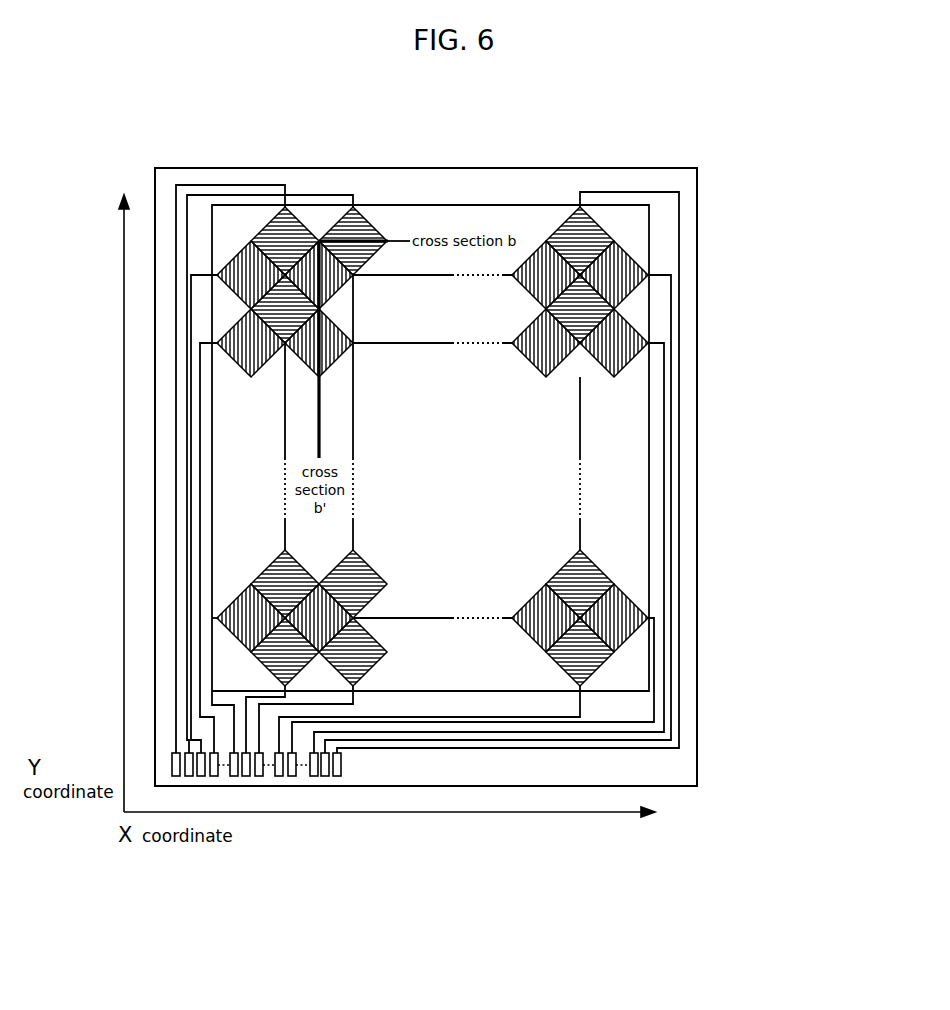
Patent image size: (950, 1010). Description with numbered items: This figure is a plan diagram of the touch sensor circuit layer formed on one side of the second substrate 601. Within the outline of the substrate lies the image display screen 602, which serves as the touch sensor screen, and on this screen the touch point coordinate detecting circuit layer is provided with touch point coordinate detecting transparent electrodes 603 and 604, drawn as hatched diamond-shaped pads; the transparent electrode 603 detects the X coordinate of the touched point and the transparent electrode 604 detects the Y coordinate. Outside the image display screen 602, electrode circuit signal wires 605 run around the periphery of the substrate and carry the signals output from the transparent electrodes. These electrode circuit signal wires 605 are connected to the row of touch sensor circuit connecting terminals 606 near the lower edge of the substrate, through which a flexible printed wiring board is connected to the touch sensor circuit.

The second substrate 601 is at (682, 180).
The image display screen 602 is at (455, 203).
The touch point coordinate detecting transparent electrode 603 is at (557, 222).
The touch point coordinate detecting transparent electrode 604 is at (650, 273).
The electrode circuit signal wires 605 is at (672, 700).
The touch sensor circuit connecting terminals 606 is at (293, 778).